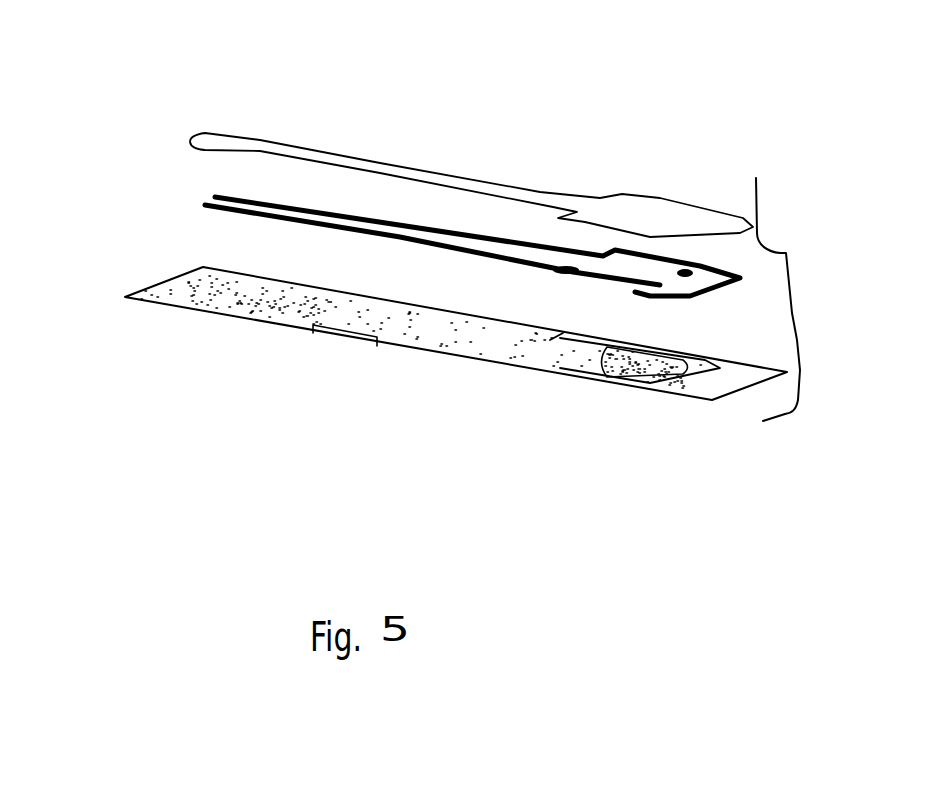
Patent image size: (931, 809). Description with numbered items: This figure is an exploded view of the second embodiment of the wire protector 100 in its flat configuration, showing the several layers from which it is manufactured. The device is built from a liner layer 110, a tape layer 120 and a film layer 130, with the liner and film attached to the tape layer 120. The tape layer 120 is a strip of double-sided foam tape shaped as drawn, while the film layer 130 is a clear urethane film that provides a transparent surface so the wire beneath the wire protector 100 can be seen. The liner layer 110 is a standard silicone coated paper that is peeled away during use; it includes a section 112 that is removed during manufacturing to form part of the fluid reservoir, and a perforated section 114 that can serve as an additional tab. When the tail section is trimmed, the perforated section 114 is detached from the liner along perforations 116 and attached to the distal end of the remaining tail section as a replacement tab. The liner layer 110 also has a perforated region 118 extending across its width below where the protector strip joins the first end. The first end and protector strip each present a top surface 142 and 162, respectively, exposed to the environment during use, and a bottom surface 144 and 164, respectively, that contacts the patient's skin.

The wire protector 100 is at (790, 299).
The liner layer 110 is at (270, 298).
The section 112 is at (650, 390).
The perforated section 114 is at (333, 330).
The perforations 116 is at (373, 332).
The perforated region 118 is at (523, 375).
The tape layer 120 is at (207, 202).
The film layer 130 is at (262, 146).
The top surface of first end 142 is at (648, 198).
The bottom surface of first end 144 is at (670, 297).
The top surface of protector strip 162 is at (383, 175).
The bottom surface of protector strip 164 is at (373, 233).